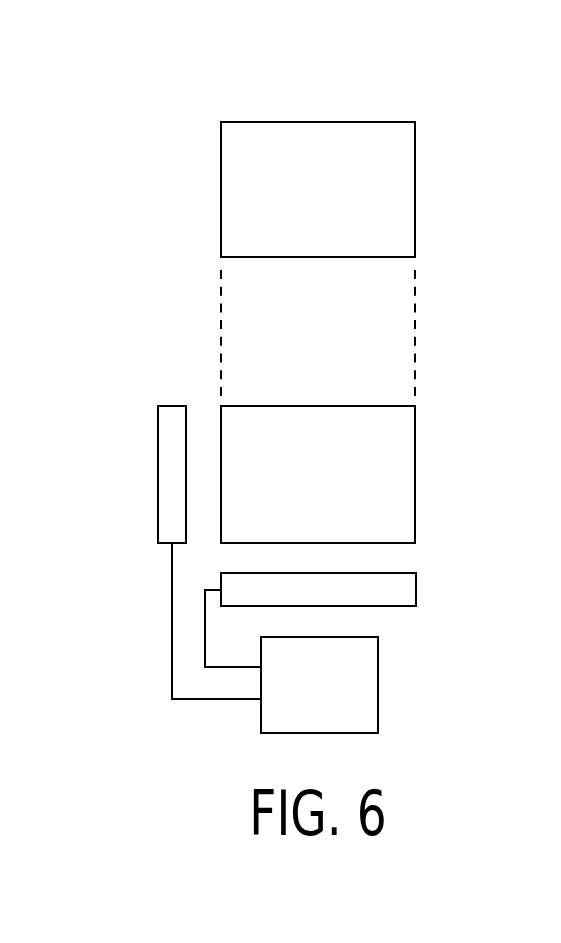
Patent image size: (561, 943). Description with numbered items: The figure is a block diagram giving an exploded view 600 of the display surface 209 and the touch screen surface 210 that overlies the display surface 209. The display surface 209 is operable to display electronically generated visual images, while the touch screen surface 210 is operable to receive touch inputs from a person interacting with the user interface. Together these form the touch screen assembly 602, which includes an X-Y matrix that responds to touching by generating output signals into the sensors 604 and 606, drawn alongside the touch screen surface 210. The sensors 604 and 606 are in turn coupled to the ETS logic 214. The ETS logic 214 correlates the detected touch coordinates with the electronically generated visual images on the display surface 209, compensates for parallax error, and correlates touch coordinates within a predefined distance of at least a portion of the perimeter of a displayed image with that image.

The exploded view 600 is at (154, 83).
The touch screen assembly 602 is at (151, 352).
The display surface 209 is at (297, 198).
The touch screen surface 210 is at (340, 485).
The sensor 606 is at (158, 457).
The sensor 604 is at (416, 590).
The ETS logic 214 is at (378, 693).